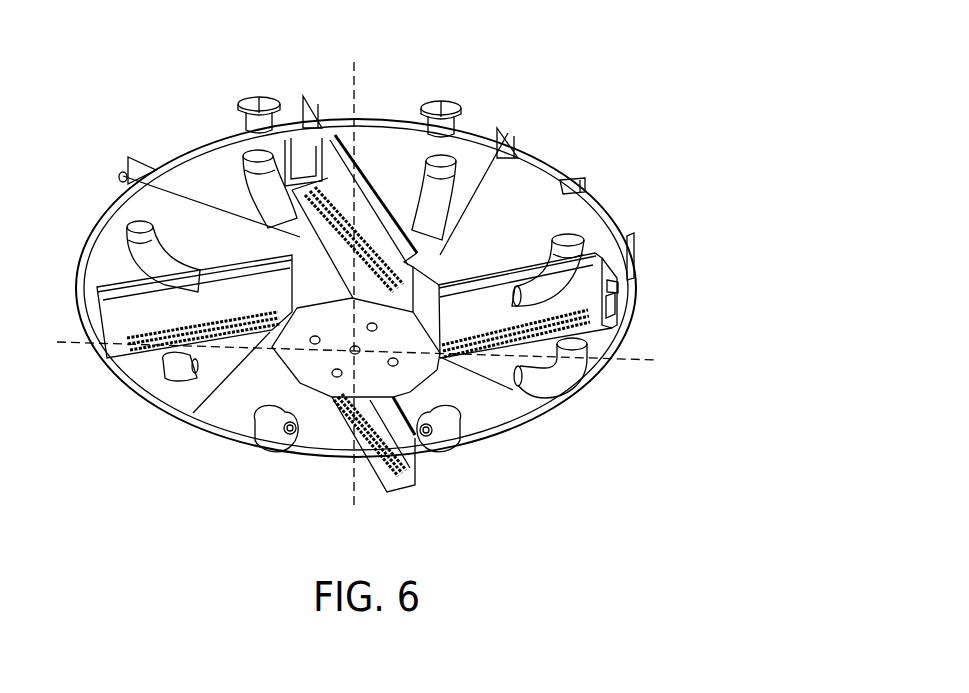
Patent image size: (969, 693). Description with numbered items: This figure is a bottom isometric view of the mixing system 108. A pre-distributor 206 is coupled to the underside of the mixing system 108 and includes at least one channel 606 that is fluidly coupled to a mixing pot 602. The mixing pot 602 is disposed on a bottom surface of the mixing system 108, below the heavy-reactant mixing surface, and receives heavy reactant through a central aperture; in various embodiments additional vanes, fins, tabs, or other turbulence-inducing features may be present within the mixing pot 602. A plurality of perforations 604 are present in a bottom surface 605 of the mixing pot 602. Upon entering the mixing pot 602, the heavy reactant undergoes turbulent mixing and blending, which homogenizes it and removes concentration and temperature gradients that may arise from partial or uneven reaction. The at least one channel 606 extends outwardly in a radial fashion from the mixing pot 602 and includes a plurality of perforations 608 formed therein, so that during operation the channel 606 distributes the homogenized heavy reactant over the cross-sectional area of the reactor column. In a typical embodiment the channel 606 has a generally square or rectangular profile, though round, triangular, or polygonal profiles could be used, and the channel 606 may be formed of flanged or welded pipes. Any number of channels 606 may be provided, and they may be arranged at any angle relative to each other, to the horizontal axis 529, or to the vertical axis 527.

The mixing system 108 is at (591, 75).
The pre-distributor 206 is at (607, 300).
The vertical axis 527 is at (360, 84).
The horizontal axis 529 is at (640, 361).
The mixing pot 602 is at (423, 377).
The perforations 604 is at (336, 378).
The bottom surface 605 is at (415, 338).
The channel 606 is at (368, 225).
The perforations 608 is at (300, 262).